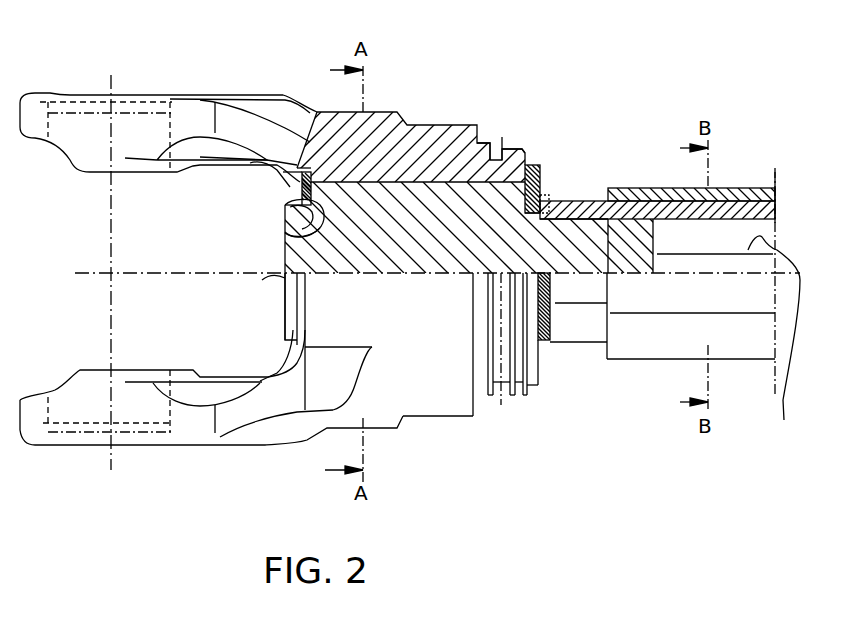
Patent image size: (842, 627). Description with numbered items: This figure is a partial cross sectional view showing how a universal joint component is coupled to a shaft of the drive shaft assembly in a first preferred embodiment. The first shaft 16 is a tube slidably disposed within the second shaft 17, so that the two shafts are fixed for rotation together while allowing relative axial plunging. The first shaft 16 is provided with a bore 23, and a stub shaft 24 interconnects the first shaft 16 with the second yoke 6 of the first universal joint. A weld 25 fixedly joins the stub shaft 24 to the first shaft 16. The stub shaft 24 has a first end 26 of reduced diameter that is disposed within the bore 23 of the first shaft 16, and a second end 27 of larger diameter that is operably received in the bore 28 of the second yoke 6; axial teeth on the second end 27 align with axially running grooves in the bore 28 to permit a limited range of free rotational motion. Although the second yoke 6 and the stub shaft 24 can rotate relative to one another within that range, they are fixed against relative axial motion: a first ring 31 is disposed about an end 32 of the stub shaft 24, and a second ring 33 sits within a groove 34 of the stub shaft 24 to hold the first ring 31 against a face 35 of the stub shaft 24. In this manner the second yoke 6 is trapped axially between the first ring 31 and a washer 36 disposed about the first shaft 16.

The second yoke 6 is at (262, 95).
The first shaft 16 is at (586, 201).
The second shaft 17 is at (745, 188).
The bore 23 is at (703, 310).
The stub shaft 24 is at (478, 177).
The weld 25 is at (540, 345).
The first end 26 is at (630, 240).
The second end 27 is at (433, 205).
The bore 28 is at (403, 176).
The first ring 31 is at (280, 197).
The end 32 is at (280, 278).
The second ring 33 is at (282, 176).
The groove 34 is at (282, 218).
The face 35 is at (282, 228).
The washer 36 is at (540, 165).